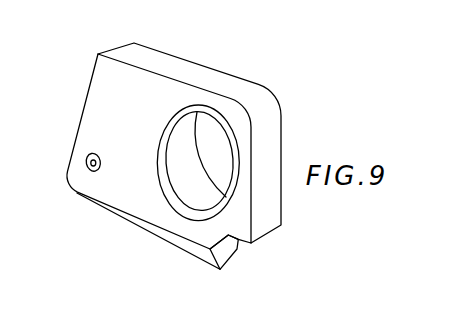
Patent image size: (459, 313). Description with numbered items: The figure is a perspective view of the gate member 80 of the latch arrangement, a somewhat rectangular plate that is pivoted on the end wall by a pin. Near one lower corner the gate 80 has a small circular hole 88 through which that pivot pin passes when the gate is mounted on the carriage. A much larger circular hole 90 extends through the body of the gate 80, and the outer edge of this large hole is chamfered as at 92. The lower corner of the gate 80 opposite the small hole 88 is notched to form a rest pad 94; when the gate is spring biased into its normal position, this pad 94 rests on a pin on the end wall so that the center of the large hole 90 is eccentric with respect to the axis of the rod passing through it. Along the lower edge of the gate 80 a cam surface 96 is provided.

The gate member 80 is at (168, 67).
The circular hole 88 is at (92, 168).
The circular hole 90 is at (183, 165).
The chamfer 92 is at (175, 107).
The rest pad 94 is at (242, 243).
The cam surface 96 is at (188, 248).